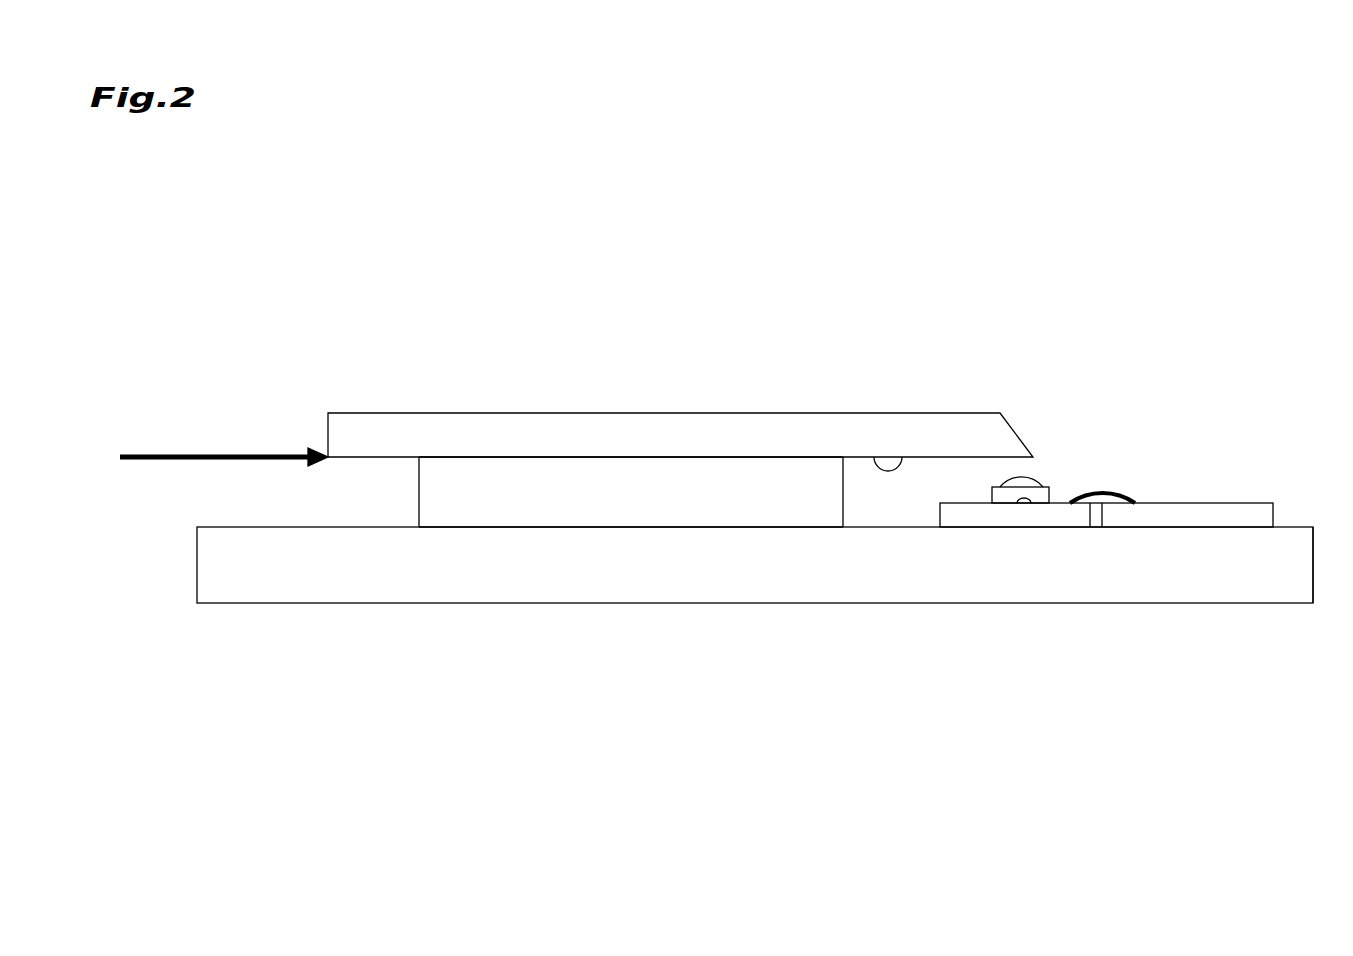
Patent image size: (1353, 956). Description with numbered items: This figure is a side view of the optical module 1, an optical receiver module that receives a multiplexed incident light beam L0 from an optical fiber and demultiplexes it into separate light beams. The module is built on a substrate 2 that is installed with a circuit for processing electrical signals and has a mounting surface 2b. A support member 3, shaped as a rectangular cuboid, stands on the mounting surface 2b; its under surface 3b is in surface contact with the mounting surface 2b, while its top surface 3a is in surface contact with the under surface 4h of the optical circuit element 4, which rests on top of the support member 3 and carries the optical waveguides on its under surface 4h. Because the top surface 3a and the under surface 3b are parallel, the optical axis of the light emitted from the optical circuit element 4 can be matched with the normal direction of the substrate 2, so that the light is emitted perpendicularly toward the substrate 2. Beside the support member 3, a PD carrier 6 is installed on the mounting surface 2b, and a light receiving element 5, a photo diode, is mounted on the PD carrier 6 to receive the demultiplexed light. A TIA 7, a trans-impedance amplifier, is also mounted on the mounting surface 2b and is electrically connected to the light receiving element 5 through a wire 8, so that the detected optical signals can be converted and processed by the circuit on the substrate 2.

The optical module 1 is at (944, 275).
The substrate 2 is at (918, 590).
The mounting surface 2b is at (1295, 527).
The support member 3 is at (436, 491).
The top surface 3a is at (532, 457).
The under surface 3b is at (533, 527).
The optical circuit element 4 is at (642, 426).
The under surface 4h is at (901, 457).
The light receiving element 5 is at (997, 500).
The PD carrier 6 is at (1065, 512).
The TIA 7 is at (1203, 512).
The wire 8 is at (1100, 492).
The incident light beam L0 is at (159, 450).